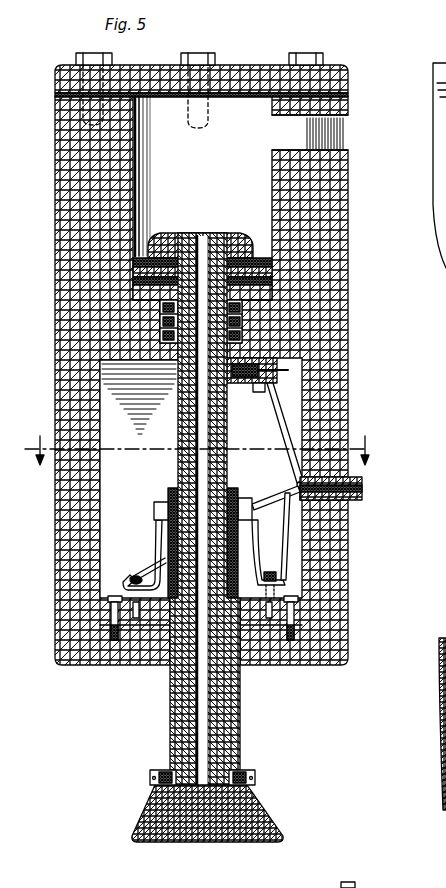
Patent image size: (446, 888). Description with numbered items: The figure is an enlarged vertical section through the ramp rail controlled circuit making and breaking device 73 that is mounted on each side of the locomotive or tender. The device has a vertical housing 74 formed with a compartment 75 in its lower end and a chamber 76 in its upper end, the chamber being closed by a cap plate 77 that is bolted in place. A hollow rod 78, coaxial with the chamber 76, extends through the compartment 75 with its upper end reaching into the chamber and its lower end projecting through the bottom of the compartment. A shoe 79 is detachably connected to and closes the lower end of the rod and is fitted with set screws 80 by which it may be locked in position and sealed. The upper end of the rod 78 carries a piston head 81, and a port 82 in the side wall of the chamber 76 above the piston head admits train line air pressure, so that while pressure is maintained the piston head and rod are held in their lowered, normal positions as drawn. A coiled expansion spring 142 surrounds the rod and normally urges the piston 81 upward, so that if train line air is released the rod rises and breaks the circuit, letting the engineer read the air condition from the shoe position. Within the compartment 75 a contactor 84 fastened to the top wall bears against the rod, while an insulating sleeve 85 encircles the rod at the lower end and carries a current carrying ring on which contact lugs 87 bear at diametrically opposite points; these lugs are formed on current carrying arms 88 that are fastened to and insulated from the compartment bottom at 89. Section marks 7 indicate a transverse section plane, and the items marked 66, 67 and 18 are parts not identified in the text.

The cap plate 77 is at (242, 68).
The chamber 76 is at (183, 176).
The port 82 is at (346, 138).
The piston head 81 is at (168, 233).
The housing 74 is at (322, 279).
The coiled expansion spring 142 is at (244, 324).
The ramp rail controlled circuit making and breaking device 73 is at (350, 378).
The compartment 75 is at (139, 405).
The contactor 84 is at (243, 383).
The block 66 is at (245, 497).
The lever arm 67 is at (262, 503).
The contact lugs 87 is at (154, 504).
The current carrying arms 88 is at (156, 543).
The insulating sleeve 85 is at (238, 553).
The insulated fastening 89 is at (118, 612).
The hollow rod 78 is at (170, 720).
The set screws 80 is at (258, 776).
The shoe 79 is at (155, 815).
The section line 7- 7 is at (197, 450).
The element 18 is at (302, 887).